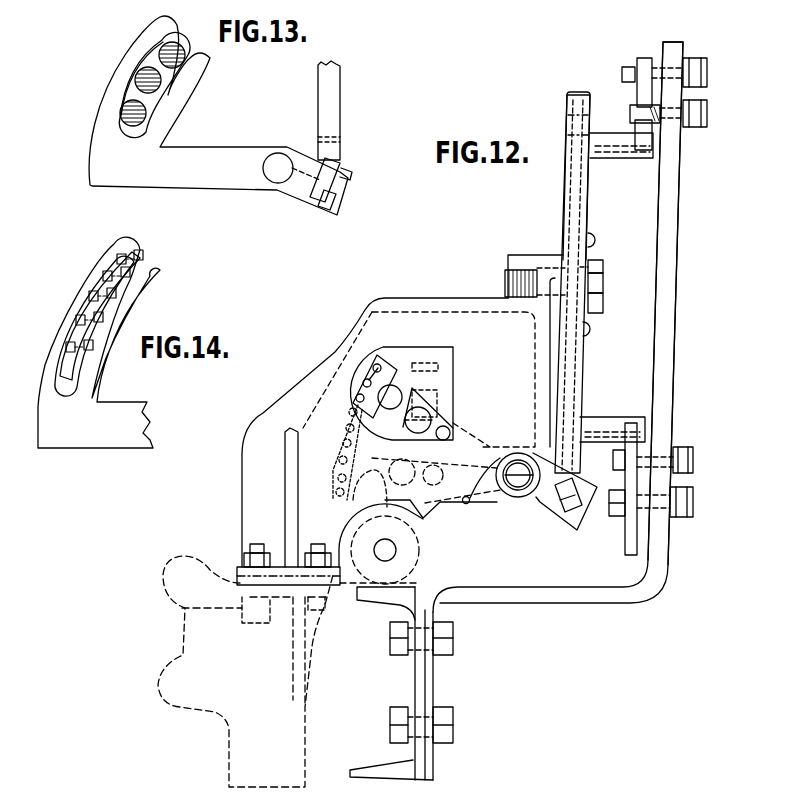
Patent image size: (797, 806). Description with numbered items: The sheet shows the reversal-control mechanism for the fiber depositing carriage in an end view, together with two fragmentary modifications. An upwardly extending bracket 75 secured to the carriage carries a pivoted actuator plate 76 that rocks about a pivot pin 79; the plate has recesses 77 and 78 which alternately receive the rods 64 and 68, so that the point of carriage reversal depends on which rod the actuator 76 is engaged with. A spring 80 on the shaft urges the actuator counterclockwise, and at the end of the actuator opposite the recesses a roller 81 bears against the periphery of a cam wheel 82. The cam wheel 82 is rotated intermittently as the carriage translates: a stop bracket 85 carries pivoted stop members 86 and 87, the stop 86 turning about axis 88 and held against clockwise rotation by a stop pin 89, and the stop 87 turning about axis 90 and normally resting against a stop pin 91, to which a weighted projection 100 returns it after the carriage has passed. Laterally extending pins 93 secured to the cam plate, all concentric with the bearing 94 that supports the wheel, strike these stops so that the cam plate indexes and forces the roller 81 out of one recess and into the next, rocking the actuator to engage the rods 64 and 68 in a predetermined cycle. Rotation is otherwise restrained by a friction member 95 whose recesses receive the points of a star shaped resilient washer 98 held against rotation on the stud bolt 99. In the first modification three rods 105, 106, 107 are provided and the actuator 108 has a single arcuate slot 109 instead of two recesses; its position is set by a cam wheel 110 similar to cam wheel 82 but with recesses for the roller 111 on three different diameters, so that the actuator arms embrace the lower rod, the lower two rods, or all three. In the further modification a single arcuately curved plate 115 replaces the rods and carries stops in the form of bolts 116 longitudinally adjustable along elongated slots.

In FIG. 12, the rod 64 is at (396, 550).
In FIG. 12, the rod 68 is at (397, 380).
In FIG. 12, the bracket 75 is at (448, 298).
In FIG. 12, the actuator plate 76 is at (411, 507).
In FIG. 12, the recess 77 is at (347, 493).
In FIG. 12, the recess 78 is at (397, 370).
In FIG. 12, the pivot pin 79 is at (518, 487).
In FIG. 12, the spring 80 is at (466, 503).
In FIG. 12, the roller 81 is at (562, 507).
In FIG. 12, the cam wheel 82 is at (587, 188).
In FIG. 12, the stop bracket 85 is at (677, 248).
In FIG. 12, the stop member 86 is at (642, 150).
In FIG. 12, the stop member 87 is at (637, 443).
In FIG. 12, the axis 88 is at (708, 73).
In FIG. 12, the stop pin 89 is at (660, 122).
In FIG. 12, the axis 90 is at (627, 500).
In FIG. 12, the stop pin 91 is at (650, 450).
In FIG. 12, the pins 93 is at (612, 134).
In FIG. 12, the bearing 94 is at (537, 258).
In FIG. 12, the friction member 95 is at (584, 350).
In FIG. 12, the star shaped resilient washer 98 is at (593, 243).
In FIG. 12, the stud bolt 99 is at (603, 267).
In FIG. 12, the weighted projection 100 is at (628, 557).
In FIG. 13, the rod 105 is at (147, 115).
In FIG. 13, the rod 106 is at (161, 82).
In FIG. 13, the rod 107 is at (184, 57).
In FIG. 13, the actuator 108 is at (187, 183).
In FIG. 14, the actuator 108 is at (103, 442).
In FIG. 13, the arcuate slot 109 is at (148, 60).
In FIG. 14, the arcuate slot 109 is at (60, 367).
In FIG. 13, the cam wheel 110 is at (335, 110).
In FIG. 13, the roller 111 is at (320, 198).
In FIG. 14, the arcuately curved plate 115 is at (144, 260).
In FIG. 14, the bolts 116 is at (120, 263).